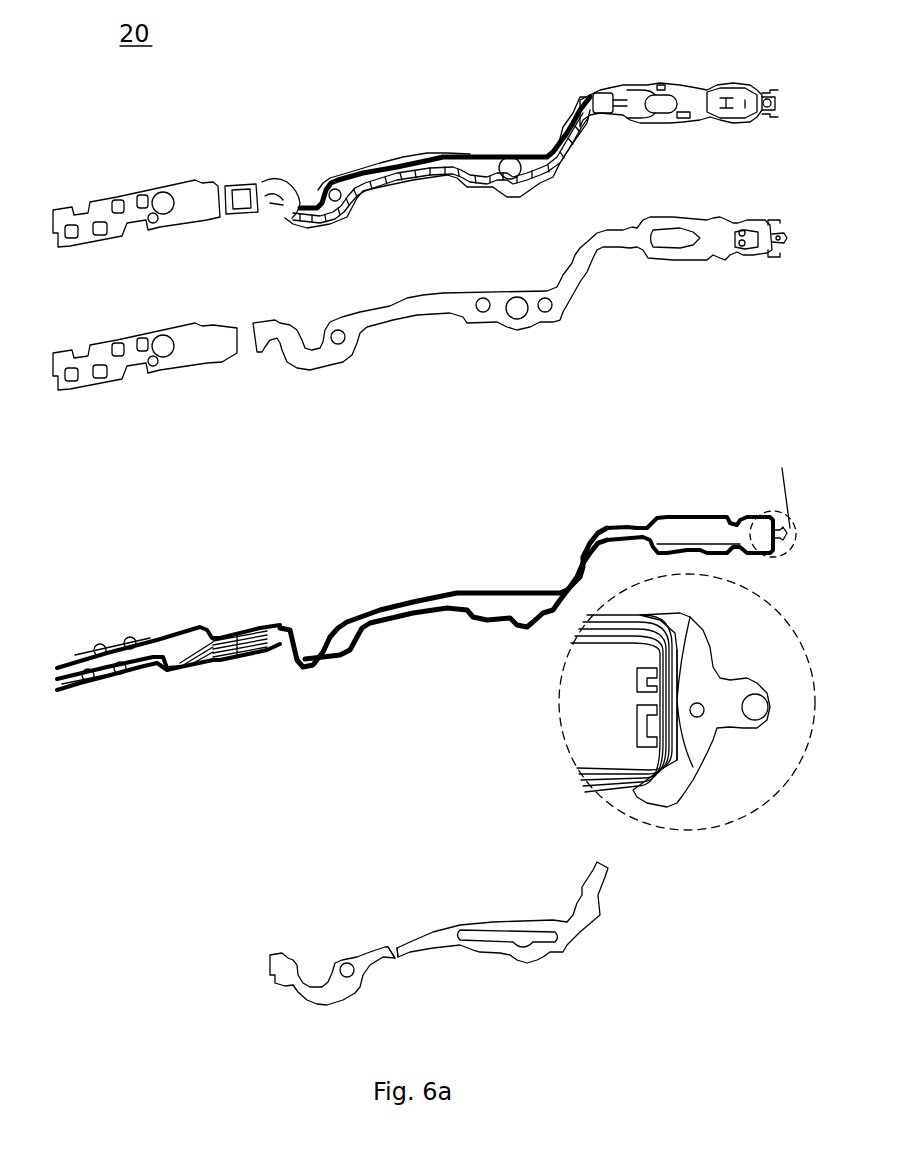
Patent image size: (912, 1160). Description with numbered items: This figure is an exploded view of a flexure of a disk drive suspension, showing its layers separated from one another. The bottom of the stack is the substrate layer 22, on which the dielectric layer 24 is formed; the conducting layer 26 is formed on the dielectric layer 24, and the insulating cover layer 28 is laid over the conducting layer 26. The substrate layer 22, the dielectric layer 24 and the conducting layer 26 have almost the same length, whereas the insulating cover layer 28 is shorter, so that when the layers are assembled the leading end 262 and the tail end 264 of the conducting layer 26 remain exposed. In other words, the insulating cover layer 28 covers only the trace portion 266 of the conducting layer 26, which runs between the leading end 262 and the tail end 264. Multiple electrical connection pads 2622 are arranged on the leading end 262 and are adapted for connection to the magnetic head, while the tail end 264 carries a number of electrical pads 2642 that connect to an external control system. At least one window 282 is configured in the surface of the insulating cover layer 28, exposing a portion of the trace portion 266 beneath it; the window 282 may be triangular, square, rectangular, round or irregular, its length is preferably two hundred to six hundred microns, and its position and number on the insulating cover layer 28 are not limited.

The substrate layer 22 is at (202, 207).
The dielectric layer 24 is at (212, 347).
The conducting layer 26 is at (630, 433).
The leading end 262 is at (757, 511).
The tail end 264 is at (140, 625).
The trace portion 266 is at (455, 578).
The electrical connection pads 2622 is at (637, 705).
The electrical pads 2642 is at (120, 672).
The insulating cover layer 28 is at (422, 923).
The window 282 is at (392, 938).